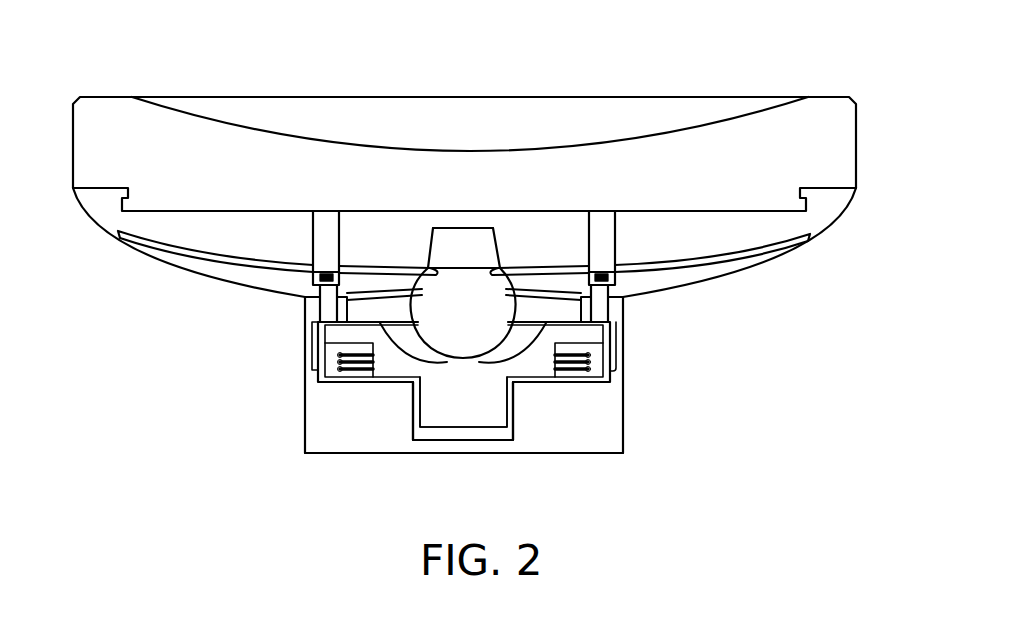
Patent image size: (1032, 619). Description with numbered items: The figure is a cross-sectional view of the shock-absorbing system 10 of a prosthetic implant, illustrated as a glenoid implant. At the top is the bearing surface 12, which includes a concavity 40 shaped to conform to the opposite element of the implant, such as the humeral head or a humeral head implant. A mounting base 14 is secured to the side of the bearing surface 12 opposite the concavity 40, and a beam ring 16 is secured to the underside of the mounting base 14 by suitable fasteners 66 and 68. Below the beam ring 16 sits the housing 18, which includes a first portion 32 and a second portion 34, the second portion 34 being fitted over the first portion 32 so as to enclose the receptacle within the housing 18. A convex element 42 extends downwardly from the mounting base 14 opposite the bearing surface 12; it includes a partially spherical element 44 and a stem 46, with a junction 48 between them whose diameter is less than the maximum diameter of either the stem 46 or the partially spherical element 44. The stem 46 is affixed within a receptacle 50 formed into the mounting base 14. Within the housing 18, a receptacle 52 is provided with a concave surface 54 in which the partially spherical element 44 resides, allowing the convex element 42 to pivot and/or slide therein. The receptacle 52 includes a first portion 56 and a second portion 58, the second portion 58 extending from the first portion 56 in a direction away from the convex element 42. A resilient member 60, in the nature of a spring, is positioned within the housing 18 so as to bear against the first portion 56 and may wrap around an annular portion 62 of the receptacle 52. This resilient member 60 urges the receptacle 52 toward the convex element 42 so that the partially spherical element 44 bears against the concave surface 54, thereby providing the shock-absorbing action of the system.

The shock-absorbing system 10 is at (792, 70).
The bearing surface 12 is at (842, 143).
The mounting base 14 is at (825, 222).
The beam ring 16 is at (767, 258).
The housing 18 is at (595, 447).
The first portion 32 is at (625, 445).
The second portion 34 is at (622, 337).
The concavity 40 is at (492, 100).
The convex element 42 is at (475, 327).
The partially spherical element 44 is at (425, 345).
The stem 46 is at (497, 250).
The junction 48 is at (412, 268).
The receptacle 50 is at (486, 228).
The receptacle 52 is at (487, 410).
The concave surface 54 is at (490, 355).
The first portion 56 is at (595, 333).
The second portion 58 is at (433, 420).
The resilient member 60 is at (582, 382).
The annular portion 62 is at (382, 363).
The fastener 66 is at (604, 298).
The fastener 68 is at (310, 318).